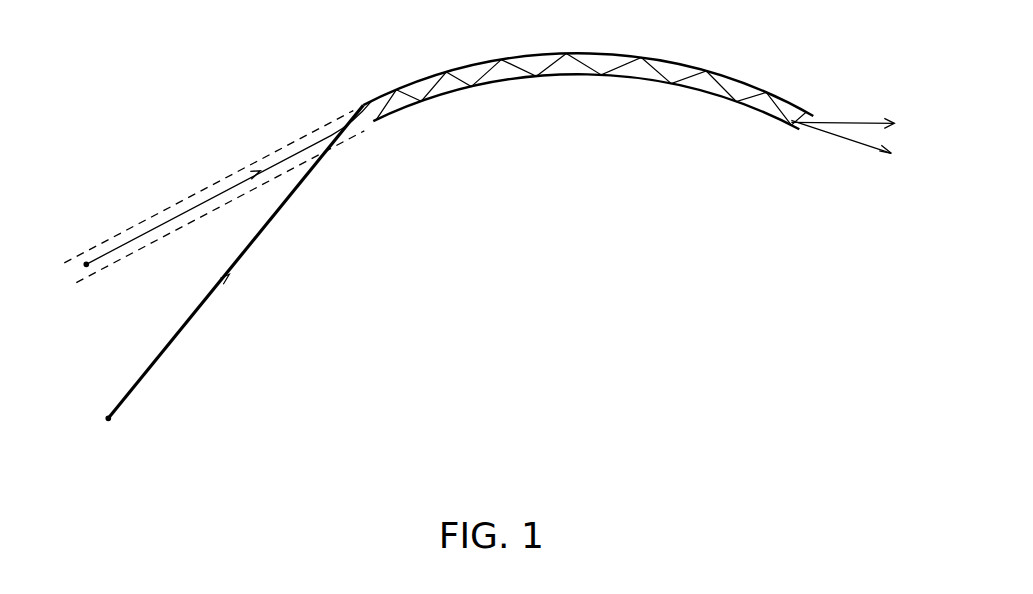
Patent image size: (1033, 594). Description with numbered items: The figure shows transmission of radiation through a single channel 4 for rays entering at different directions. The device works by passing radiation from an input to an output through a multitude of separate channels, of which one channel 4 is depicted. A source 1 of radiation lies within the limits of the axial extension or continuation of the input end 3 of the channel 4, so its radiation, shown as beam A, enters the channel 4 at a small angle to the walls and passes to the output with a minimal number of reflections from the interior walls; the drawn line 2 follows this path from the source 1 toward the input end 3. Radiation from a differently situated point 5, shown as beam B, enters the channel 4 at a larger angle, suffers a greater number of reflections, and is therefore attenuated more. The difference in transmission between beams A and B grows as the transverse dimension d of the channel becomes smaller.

The source 1 is at (83, 261).
The first trajectory line 2 is at (178, 205).
The input end 3 is at (376, 114).
The channel 4 is at (573, 72).
The point 5 is at (105, 415).
The beam A is at (293, 152).
The beam B is at (263, 232).
The dimension of the channel d is at (342, 82).